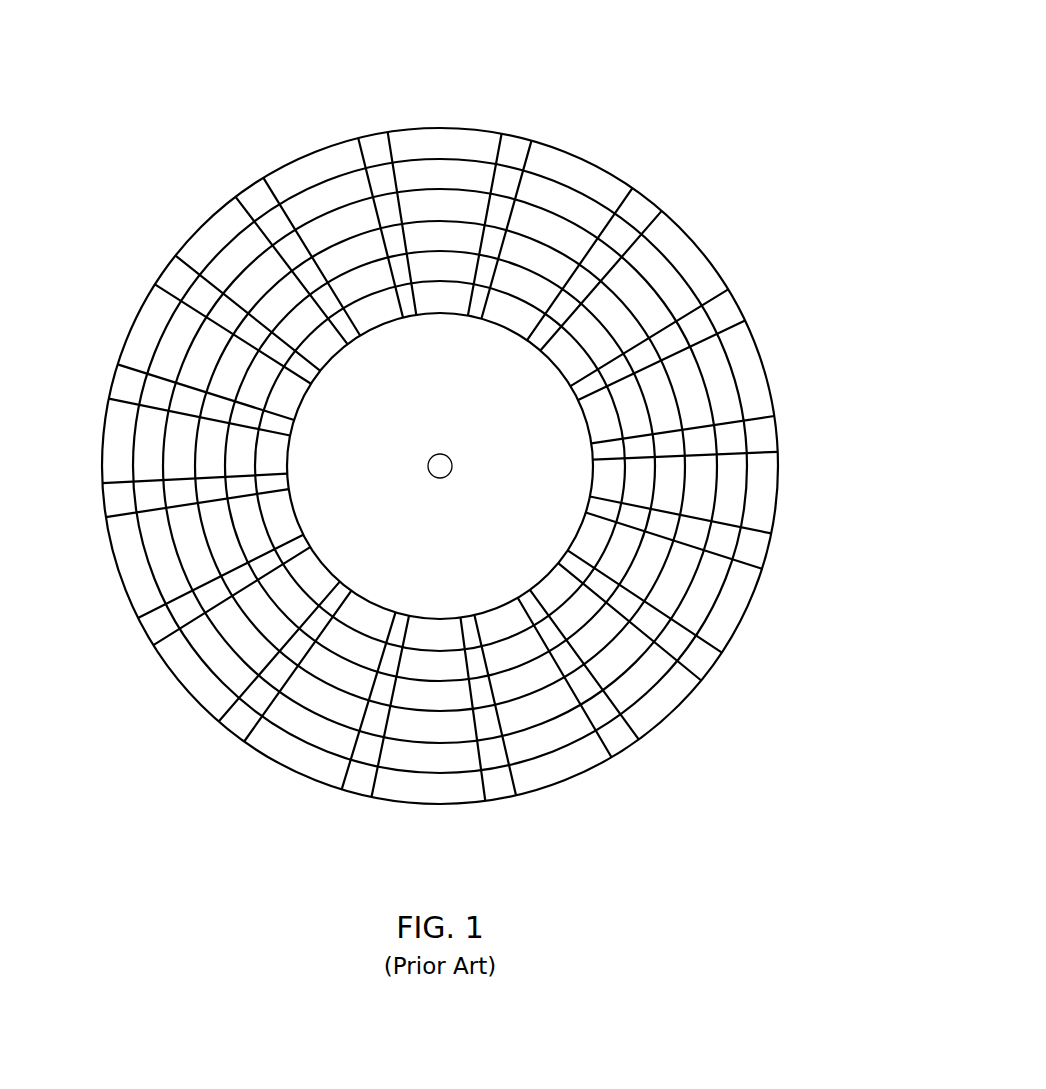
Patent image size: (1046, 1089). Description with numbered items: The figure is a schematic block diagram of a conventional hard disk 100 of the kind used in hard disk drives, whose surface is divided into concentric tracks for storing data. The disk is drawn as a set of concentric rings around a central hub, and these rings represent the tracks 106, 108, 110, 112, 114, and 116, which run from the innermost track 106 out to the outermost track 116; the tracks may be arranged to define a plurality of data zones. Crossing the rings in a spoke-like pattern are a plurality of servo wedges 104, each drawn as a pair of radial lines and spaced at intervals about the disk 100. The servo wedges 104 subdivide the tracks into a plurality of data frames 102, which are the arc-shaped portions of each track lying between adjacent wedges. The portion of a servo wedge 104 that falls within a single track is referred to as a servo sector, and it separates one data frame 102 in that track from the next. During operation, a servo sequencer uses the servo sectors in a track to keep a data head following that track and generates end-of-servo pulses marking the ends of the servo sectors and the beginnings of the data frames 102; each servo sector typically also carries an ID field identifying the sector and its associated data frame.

The hard disk 100 is at (758, 100).
The data frames 102 is at (436, 470).
The servo wedges 104 is at (437, 466).
The track 106 is at (362, 613).
The track 108 is at (288, 597).
The track 110 is at (222, 542).
The track 112 is at (182, 453).
The track 114 is at (175, 340).
The track 116 is at (212, 237).